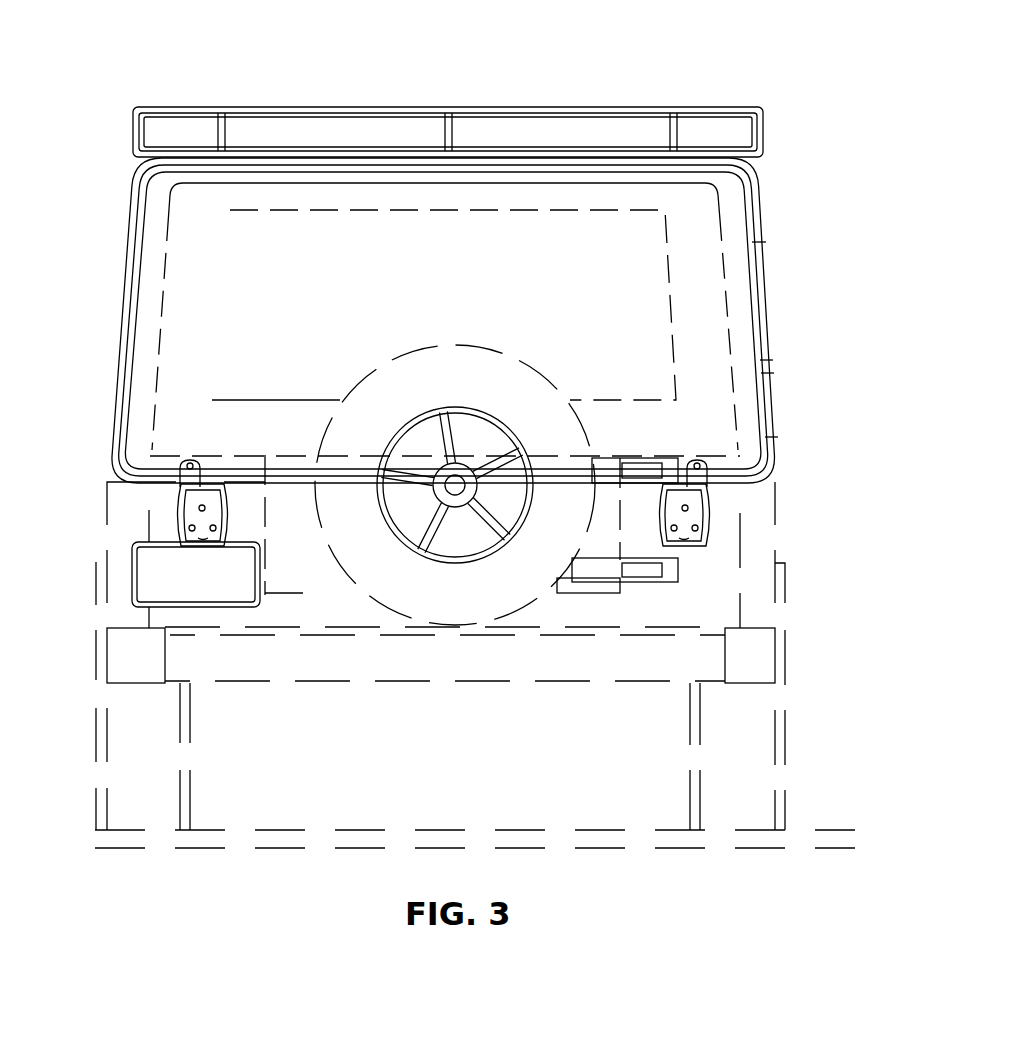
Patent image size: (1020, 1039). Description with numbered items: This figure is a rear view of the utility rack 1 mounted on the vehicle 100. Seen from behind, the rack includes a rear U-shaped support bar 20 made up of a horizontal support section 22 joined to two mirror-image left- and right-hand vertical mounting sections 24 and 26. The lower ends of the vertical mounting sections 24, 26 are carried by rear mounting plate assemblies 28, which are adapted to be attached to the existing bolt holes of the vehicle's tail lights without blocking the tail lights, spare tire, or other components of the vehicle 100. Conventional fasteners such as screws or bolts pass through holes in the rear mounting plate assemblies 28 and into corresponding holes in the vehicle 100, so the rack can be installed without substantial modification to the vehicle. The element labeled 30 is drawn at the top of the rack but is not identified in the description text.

The utility rack 1 is at (778, 78).
The rear U-shaped support bar 20 is at (765, 268).
The horizontal support section 22 is at (514, 172).
The vertical mounting section 24 is at (770, 358).
The vertical mounting section 26 is at (122, 348).
The rear mounting plate assembly 28 is at (175, 497).
The roof rack 30 is at (437, 106).
The vehicle 100 is at (815, 627).